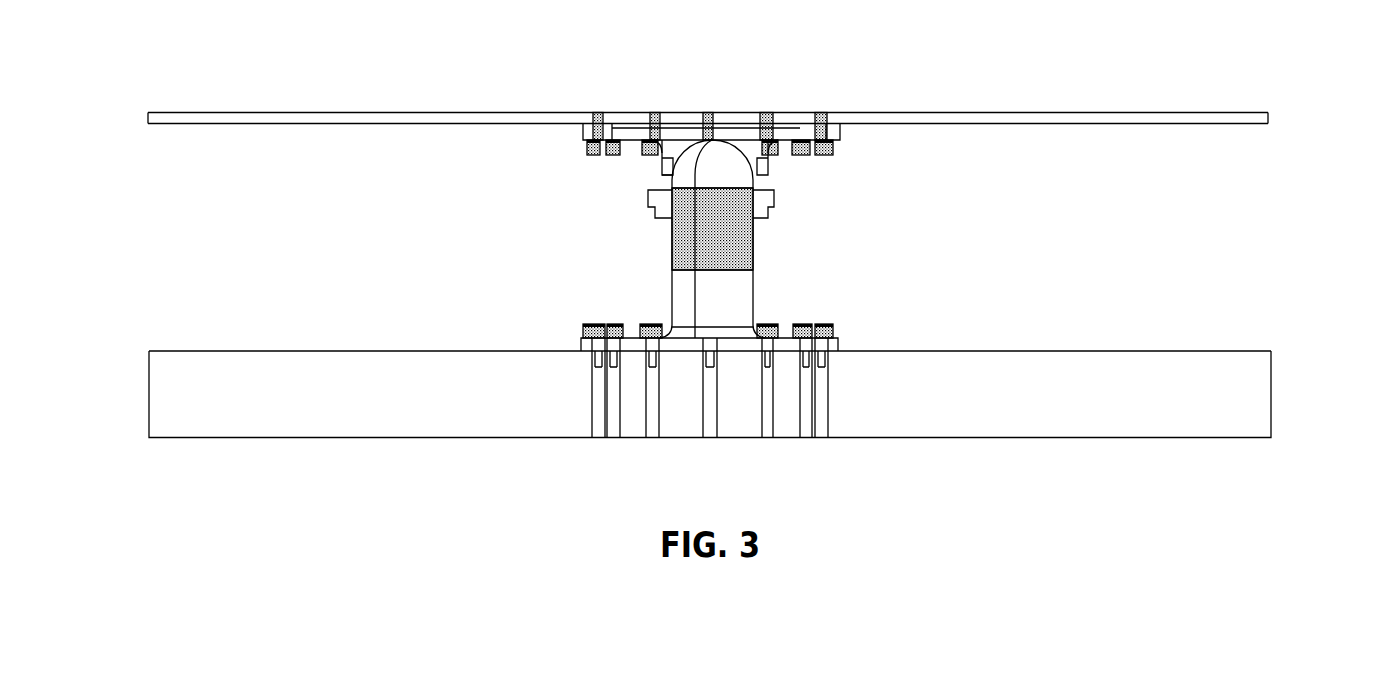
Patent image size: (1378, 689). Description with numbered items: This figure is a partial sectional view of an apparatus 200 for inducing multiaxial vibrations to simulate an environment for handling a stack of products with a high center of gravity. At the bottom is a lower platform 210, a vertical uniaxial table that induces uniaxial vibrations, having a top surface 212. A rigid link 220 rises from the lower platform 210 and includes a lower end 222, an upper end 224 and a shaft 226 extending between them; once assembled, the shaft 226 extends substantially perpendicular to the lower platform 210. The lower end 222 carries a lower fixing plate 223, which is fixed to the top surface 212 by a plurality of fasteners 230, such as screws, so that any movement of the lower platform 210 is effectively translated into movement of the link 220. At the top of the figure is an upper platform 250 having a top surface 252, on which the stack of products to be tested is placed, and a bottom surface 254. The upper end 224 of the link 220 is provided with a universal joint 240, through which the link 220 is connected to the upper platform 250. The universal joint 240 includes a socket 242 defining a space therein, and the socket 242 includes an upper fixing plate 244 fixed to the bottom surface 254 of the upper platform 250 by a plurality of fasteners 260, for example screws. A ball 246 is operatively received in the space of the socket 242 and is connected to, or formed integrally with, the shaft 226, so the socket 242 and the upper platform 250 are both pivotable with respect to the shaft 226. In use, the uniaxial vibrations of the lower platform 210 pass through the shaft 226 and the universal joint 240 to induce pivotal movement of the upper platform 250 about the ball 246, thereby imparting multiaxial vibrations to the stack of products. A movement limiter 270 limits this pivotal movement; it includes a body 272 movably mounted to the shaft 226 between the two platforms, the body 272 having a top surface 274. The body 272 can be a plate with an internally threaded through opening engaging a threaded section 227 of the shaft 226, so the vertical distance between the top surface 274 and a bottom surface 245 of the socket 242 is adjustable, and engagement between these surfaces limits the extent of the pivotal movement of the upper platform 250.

The apparatus 200 is at (141, 111).
The lower platform 210 is at (350, 410).
The top surface 212 is at (1161, 351).
The link 220 is at (765, 287).
The lower end 222 is at (732, 332).
The lower fixing plate 223 is at (583, 347).
The upper end 224 is at (768, 172).
The shaft 226 is at (672, 292).
The threaded section 227 is at (745, 253).
The fasteners 230 is at (652, 323).
The universal joint 240 is at (650, 170).
The socket 242 is at (778, 158).
The upper fixing plate 244 is at (822, 150).
The bottom surface 245 is at (663, 178).
The ball 246 is at (655, 200).
The upper platform 250 is at (1268, 118).
The top surface 252 is at (1162, 113).
The bottom surface 254 is at (1180, 124).
The fasteners 260 is at (833, 131).
The movement limiter 270 is at (918, 202).
The body 272 is at (775, 203).
The top surface 274 is at (772, 187).